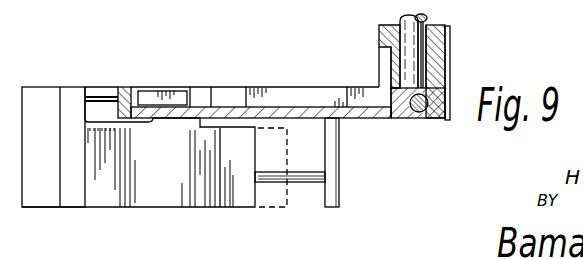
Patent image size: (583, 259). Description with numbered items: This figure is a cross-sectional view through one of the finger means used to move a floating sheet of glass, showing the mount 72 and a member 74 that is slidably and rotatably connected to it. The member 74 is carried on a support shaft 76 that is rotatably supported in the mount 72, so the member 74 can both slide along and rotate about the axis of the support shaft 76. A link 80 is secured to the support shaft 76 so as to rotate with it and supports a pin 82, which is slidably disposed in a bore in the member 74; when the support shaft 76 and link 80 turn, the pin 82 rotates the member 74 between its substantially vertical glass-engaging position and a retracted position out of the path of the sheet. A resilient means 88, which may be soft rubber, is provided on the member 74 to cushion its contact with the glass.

The mount 72 is at (291, 100).
The member 74 is at (182, 186).
The support shaft 76 is at (103, 99).
The link 80 is at (332, 186).
The pin 82 is at (313, 169).
The resilient means 88 is at (45, 97).